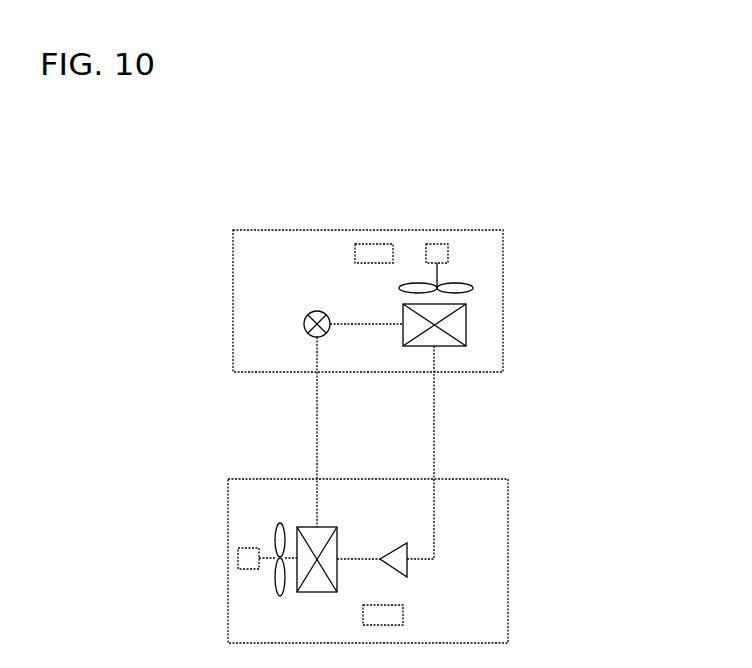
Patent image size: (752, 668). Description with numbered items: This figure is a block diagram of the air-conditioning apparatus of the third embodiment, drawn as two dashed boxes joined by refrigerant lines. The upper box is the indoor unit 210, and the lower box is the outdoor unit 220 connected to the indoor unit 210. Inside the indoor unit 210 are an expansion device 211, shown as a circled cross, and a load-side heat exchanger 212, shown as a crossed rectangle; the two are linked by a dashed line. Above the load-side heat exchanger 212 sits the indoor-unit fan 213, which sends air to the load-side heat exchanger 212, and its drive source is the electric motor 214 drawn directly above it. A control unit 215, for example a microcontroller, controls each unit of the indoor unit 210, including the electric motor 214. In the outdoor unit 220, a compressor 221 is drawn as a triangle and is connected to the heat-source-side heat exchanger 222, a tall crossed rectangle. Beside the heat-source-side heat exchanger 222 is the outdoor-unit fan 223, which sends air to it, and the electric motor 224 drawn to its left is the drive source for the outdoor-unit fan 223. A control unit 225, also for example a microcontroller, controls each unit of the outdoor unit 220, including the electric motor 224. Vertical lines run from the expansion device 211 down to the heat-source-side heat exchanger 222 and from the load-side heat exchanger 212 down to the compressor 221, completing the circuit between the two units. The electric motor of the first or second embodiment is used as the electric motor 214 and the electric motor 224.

The indoor unit 210 is at (503, 372).
The expansion device 211 is at (303, 329).
The load-side heat exchanger 212 is at (466, 331).
The indoor-unit fan 213 is at (472, 288).
The electric motor 214 is at (438, 244).
The control unit 215 is at (375, 244).
The outdoor unit 220 is at (508, 617).
The compressor 221 is at (387, 552).
The heat-source-side heat exchanger 222 is at (330, 527).
The outdoor-unit fan 223 is at (270, 543).
The electric motor 224 is at (238, 562).
The control unit 225 is at (403, 613).